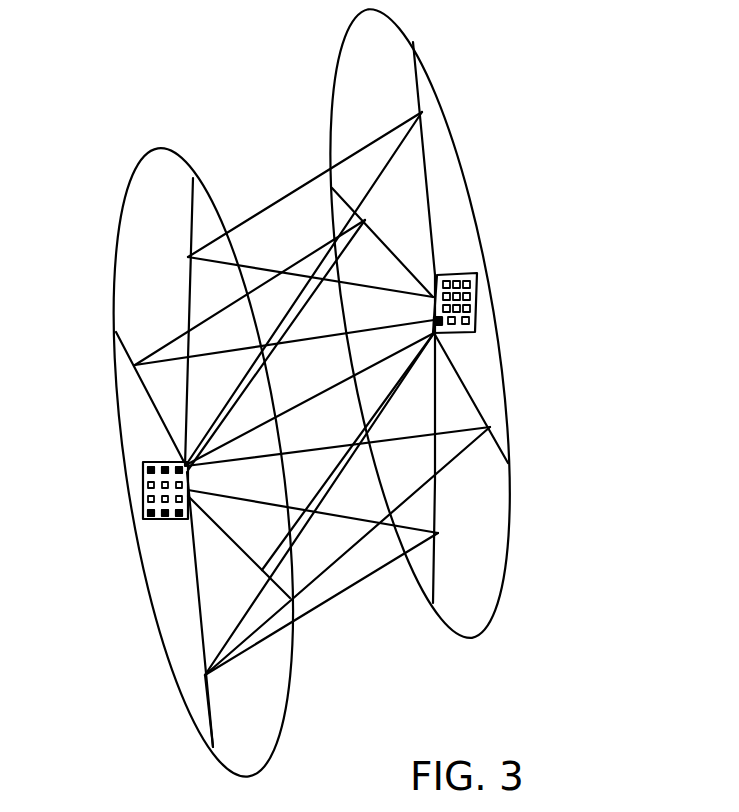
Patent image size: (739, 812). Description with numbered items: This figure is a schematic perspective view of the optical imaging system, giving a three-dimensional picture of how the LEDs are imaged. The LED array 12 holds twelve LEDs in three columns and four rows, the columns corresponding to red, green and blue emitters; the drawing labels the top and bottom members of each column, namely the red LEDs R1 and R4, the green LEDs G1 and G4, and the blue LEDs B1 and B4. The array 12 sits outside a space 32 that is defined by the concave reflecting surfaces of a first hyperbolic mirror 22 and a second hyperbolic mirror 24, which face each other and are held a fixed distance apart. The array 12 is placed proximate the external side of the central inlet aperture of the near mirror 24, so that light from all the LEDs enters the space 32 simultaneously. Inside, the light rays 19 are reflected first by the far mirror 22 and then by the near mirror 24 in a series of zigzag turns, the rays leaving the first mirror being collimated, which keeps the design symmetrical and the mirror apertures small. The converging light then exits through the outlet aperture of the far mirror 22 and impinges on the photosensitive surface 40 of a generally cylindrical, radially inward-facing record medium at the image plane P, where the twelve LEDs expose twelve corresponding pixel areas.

The LED array 12 is at (122, 505).
The light rays 19 is at (217, 272).
The first hyperbolic mirror 22 is at (490, 628).
The second hyperbolic mirror 24 is at (290, 735).
The space 32 is at (312, 381).
The photosensitive surface 40 is at (478, 273).
The image plane P is at (476, 316).
The blue LED B1 is at (181, 458).
The green LED G1 is at (168, 459).
The red LED R1 is at (143, 463).
The red LED R4 is at (145, 519).
The green LED G4 is at (161, 520).
The blue LED B4 is at (177, 520).